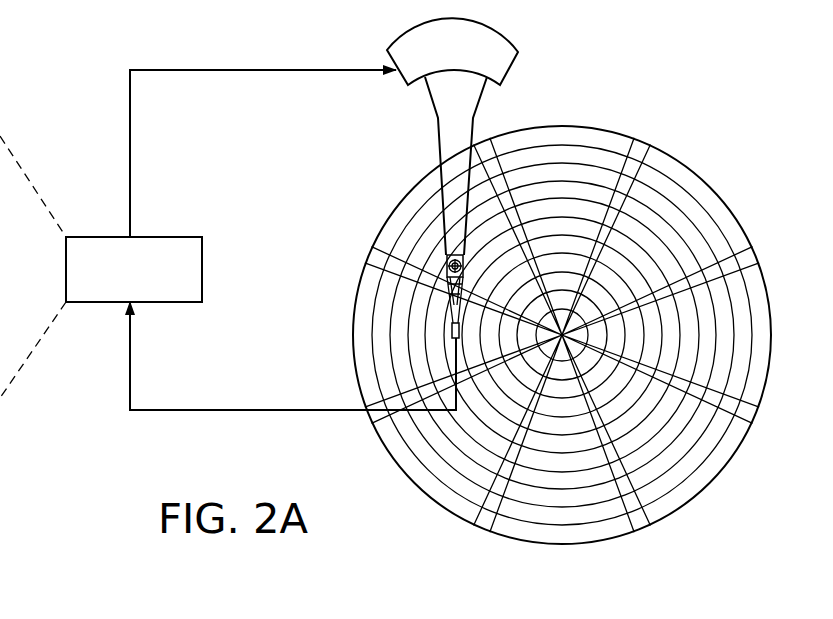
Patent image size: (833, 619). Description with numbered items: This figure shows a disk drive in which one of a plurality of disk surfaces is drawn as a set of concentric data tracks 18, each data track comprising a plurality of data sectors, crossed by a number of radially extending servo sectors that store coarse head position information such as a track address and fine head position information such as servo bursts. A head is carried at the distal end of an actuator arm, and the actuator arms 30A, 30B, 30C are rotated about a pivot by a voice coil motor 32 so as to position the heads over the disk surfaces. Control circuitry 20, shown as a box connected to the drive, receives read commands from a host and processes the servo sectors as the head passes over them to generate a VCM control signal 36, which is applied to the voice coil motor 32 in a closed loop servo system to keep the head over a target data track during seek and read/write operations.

The data tracks 18 is at (560, 152).
The control circuitry 20 is at (170, 237).
The voice coil motor 32 is at (404, 79).
The VCM control signal 36 is at (130, 141).
The actuator arm 30A is at (153, 614).
The actuator arm 30B is at (192, 614).
The actuator arm 30C is at (229, 614).